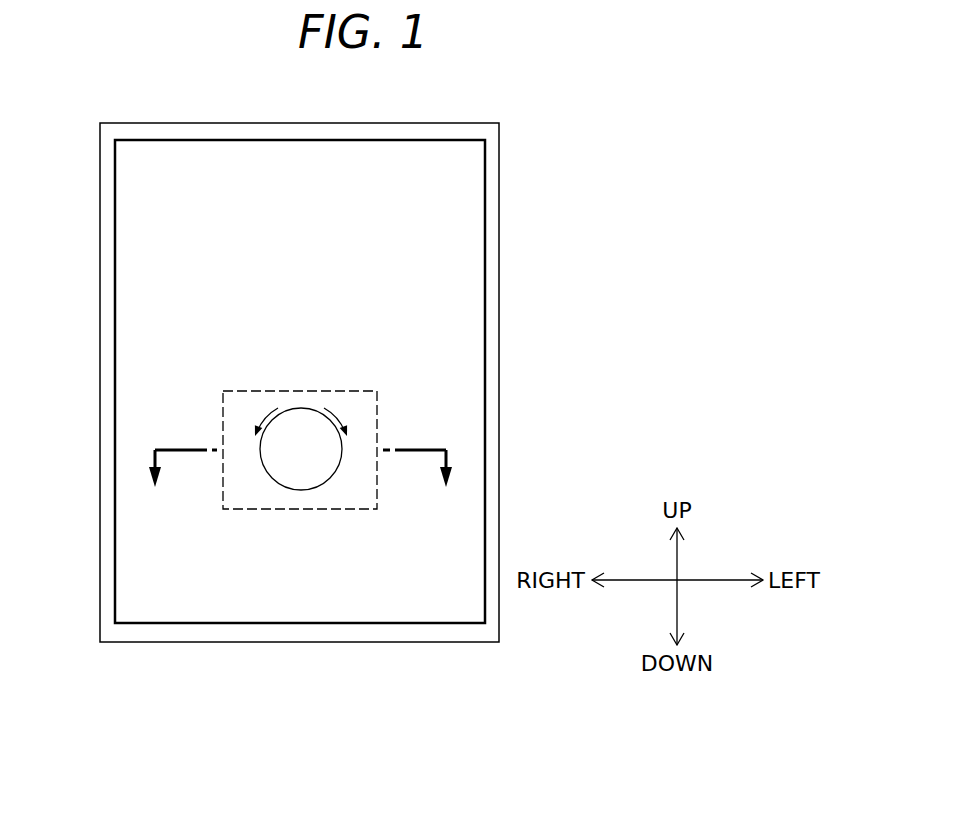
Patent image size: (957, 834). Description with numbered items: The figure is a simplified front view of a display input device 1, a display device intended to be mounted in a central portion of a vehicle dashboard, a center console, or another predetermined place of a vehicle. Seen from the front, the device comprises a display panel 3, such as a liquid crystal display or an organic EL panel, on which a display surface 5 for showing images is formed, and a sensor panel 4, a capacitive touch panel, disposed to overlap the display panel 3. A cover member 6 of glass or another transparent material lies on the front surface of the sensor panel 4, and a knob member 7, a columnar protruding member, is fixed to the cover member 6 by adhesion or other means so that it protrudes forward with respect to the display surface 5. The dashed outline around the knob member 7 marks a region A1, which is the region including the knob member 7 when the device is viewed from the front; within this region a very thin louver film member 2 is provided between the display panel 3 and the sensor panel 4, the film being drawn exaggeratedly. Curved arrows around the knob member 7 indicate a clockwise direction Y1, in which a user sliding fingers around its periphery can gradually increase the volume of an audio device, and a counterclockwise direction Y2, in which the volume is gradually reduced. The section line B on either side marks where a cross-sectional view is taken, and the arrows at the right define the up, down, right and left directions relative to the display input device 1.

The display input device 1 is at (423, 122).
The louver film member 2 is at (301, 552).
The display panel 3 is at (433, 242).
The sensor panel 4 is at (433, 295).
The display surface 5 is at (436, 339).
The cover member 6 is at (433, 383).
The knob member 7 is at (300, 490).
The region A1 is at (357, 509).
The clockwise direction Y1 is at (343, 416).
The counterclockwise direction Y2 is at (256, 416).
The line B- B is at (300, 482).